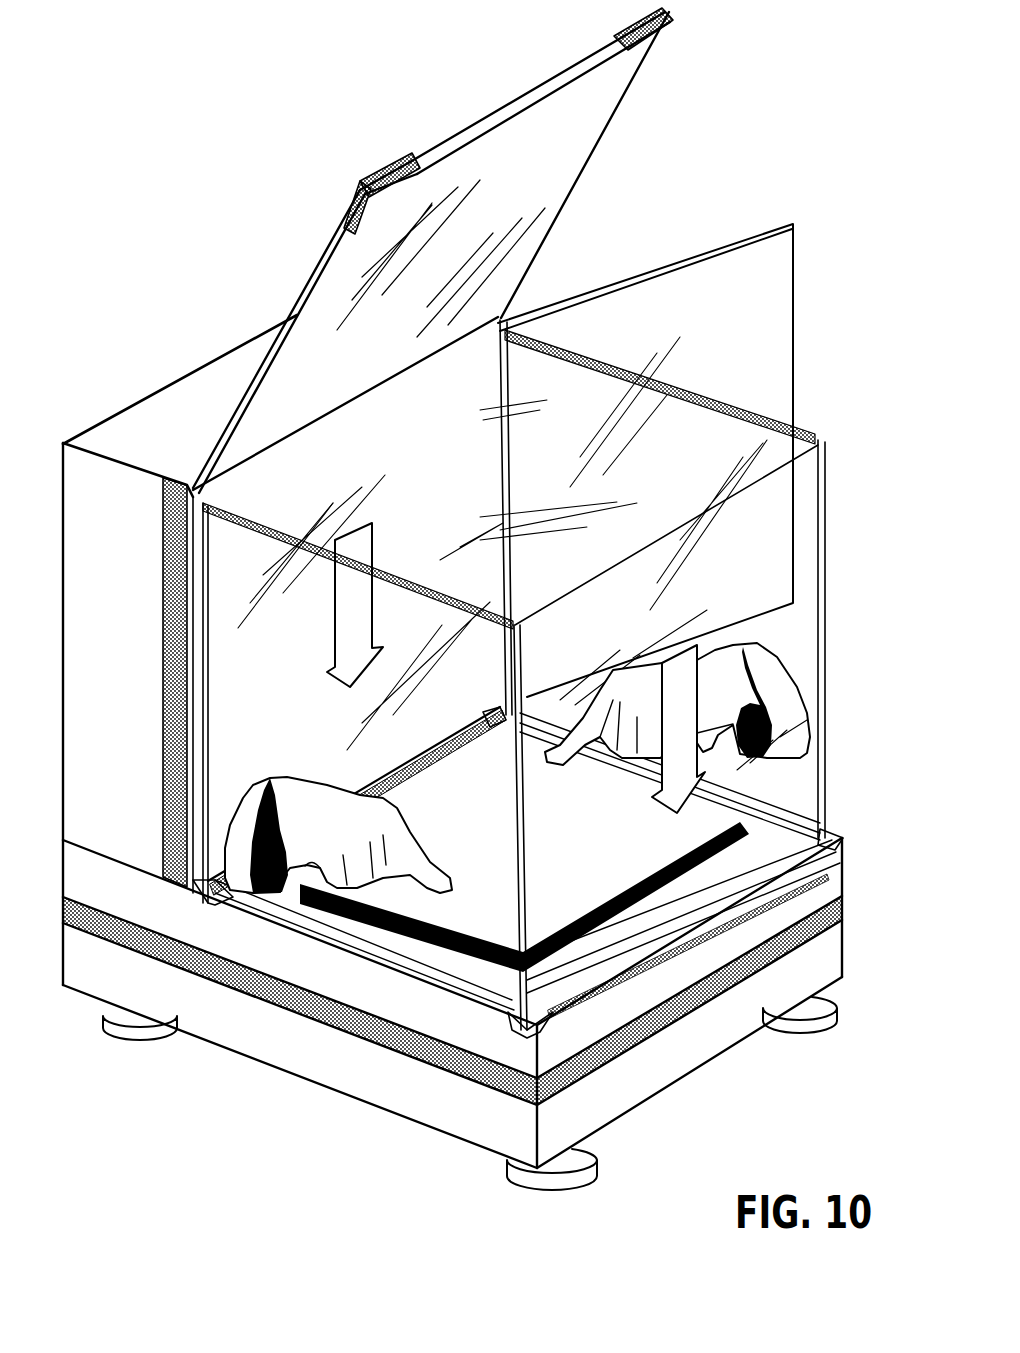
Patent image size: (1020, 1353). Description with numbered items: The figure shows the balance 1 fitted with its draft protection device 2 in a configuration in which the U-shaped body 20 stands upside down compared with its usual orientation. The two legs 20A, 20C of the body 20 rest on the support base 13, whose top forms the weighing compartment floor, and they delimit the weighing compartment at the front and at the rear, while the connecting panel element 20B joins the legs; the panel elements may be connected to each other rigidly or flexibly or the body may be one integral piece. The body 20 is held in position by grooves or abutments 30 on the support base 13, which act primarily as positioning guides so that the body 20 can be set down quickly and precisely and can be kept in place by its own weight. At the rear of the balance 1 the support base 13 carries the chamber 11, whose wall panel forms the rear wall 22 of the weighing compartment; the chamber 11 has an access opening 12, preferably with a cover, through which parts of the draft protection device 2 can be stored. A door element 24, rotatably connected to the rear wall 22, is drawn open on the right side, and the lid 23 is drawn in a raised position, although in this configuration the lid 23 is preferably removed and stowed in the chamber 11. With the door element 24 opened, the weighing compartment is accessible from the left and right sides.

The balance 1 is at (193, 1086).
The draft protection device 2 is at (725, 189).
The chamber 11 is at (160, 427).
The access opening 12 is at (182, 688).
The support base 13 is at (388, 1003).
The U-shaped body 20 is at (802, 430).
The leg of the U-shaped body 20A is at (358, 566).
The panel element of the U-shaped body 20B is at (660, 420).
The leg of the U-shaped body 20C is at (815, 640).
The rear wall 22 is at (407, 560).
The lid 23 is at (548, 180).
The door element 24 is at (773, 347).
The grooves or abutments 30 is at (793, 838).